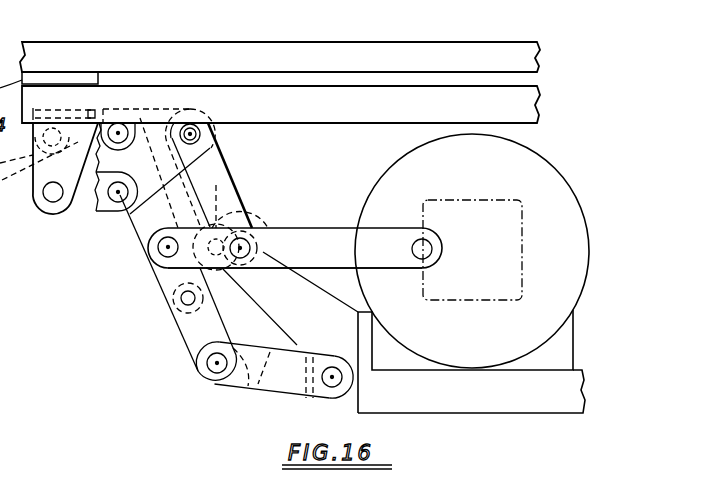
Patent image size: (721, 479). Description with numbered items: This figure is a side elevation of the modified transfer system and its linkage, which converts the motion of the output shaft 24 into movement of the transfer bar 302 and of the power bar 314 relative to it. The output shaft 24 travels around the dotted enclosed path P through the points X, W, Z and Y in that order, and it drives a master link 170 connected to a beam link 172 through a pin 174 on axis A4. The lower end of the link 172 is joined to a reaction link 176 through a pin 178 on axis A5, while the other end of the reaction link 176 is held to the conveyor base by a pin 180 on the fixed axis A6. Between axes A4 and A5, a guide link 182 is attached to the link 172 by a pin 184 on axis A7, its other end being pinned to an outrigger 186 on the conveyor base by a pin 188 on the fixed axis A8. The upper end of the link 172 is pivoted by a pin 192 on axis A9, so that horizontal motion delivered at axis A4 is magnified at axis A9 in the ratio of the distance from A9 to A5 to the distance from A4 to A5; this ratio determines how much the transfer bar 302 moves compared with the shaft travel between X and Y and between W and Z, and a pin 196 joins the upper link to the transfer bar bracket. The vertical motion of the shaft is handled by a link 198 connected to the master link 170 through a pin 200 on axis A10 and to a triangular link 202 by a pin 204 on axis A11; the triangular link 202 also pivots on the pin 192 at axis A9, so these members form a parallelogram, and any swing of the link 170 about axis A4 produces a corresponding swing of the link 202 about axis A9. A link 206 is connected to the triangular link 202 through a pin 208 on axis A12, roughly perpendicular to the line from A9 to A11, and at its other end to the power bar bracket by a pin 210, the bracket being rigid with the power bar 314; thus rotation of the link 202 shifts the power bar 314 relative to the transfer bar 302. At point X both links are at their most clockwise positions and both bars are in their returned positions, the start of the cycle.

The transfer bar 302 is at (420, 34).
The power bar 314 is at (316, 113).
The triangular link 202 is at (192, 109).
The pin 192 is at (116, 124).
The axis A9 is at (118, 131).
The pin 204 is at (201, 133).
The axis A11 is at (195, 139).
The link 198 is at (233, 183).
The axis A4 is at (170, 246).
The axis A8 is at (216, 223).
The pin 188 is at (241, 210).
The pin 200 is at (248, 228).
The axis A10 is at (242, 248).
The master link 170 is at (328, 228).
The pin 174 is at (157, 268).
The axis A12 is at (156, 266).
The output shaft 24 is at (416, 249).
The outrigger 186 is at (340, 291).
The point W is at (413, 192).
The point Z is at (527, 192).
The path P1 P is at (474, 200).
The point X is at (413, 312).
The point Y is at (527, 308).
The guide link 182 is at (213, 289).
The axis A7 is at (182, 302).
The pin 184 is at (182, 298).
The beam link 172 is at (186, 345).
The axis A5 is at (216, 364).
The pin 178 is at (214, 383).
The reaction link 176 is at (252, 353).
The axis A6 is at (330, 379).
The pin 180 is at (352, 387).
The link 206 is at (72, 212).
The pin 210 is at (55, 198).
The pin 196 is at (39, 161).
The pin / power bar bracket 208 is at (50, 178).